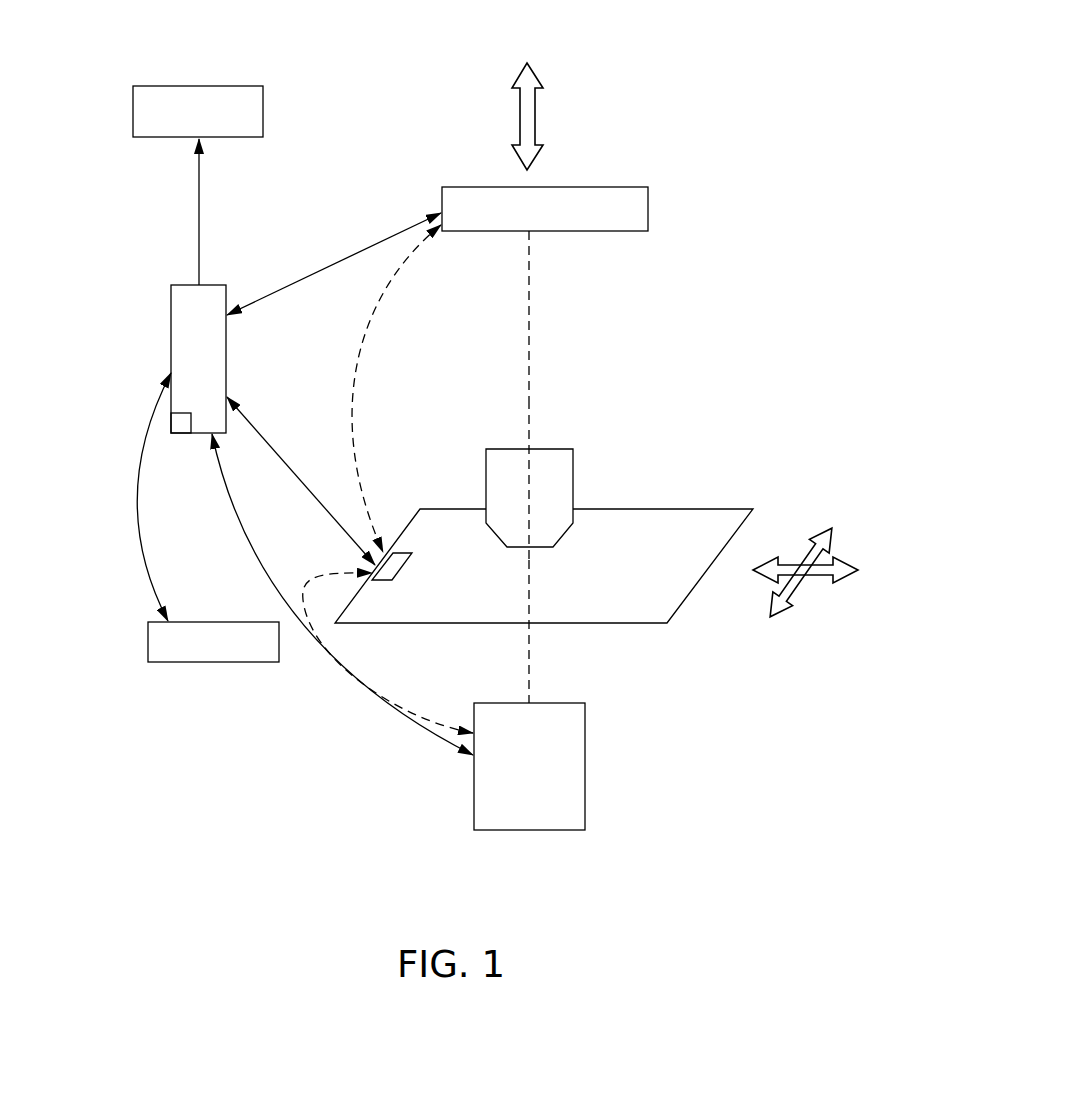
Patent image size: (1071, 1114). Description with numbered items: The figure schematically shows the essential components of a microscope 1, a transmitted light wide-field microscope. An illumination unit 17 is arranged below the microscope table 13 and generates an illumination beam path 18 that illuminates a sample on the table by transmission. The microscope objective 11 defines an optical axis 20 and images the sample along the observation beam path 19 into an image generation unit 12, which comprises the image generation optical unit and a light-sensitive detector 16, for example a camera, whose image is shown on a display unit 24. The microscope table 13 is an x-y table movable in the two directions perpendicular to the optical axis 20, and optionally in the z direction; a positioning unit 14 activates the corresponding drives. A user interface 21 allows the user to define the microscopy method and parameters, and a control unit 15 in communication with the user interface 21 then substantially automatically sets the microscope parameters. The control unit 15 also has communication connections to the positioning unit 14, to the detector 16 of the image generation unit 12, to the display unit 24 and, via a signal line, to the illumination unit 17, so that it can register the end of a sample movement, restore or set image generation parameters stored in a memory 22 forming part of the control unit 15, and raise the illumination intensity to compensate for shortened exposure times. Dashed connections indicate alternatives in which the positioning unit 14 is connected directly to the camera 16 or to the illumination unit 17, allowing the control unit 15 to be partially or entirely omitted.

The microscope 1 is at (732, 70).
The microscope objective 11 is at (573, 455).
The image generation unit 12 is at (485, 407).
The microscope table 13 is at (708, 530).
The positioning unit 14 is at (385, 550).
The control unit 15 is at (171, 338).
The light-sensitive detector 16 is at (478, 187).
The illumination unit 17 is at (585, 800).
The illumination beam path 18 is at (528, 656).
The observation beam path 19 is at (528, 254).
The optical axis 20 is at (528, 380).
The user interface 21 is at (148, 640).
The memory 22 is at (181, 425).
The display unit 24 is at (133, 112).